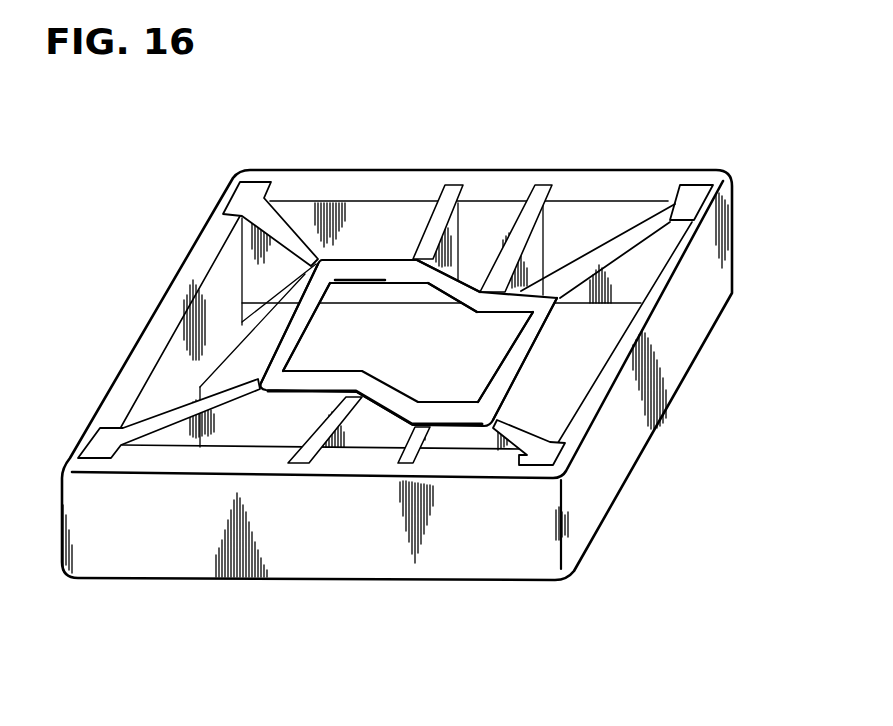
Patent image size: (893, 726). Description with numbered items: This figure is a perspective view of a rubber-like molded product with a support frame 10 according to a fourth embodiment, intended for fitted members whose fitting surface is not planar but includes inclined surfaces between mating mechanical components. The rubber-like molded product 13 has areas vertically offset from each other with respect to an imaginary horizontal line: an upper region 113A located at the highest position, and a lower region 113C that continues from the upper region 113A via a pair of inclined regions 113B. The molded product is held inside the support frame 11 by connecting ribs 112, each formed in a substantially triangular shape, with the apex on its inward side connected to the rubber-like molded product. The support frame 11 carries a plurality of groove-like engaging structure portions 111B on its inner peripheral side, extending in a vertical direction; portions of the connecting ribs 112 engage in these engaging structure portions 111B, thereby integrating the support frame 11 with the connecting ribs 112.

The rubber-like molded product with a support frame 10 is at (554, 160).
The support frame 11 is at (338, 176).
The rubber-like molded product 13 is at (390, 242).
The engaging structure portion 111B is at (256, 182).
The connecting rib 112 is at (348, 428).
The upper region 113A is at (336, 338).
The inclined region 113B is at (446, 292).
The lower region 113C is at (498, 307).